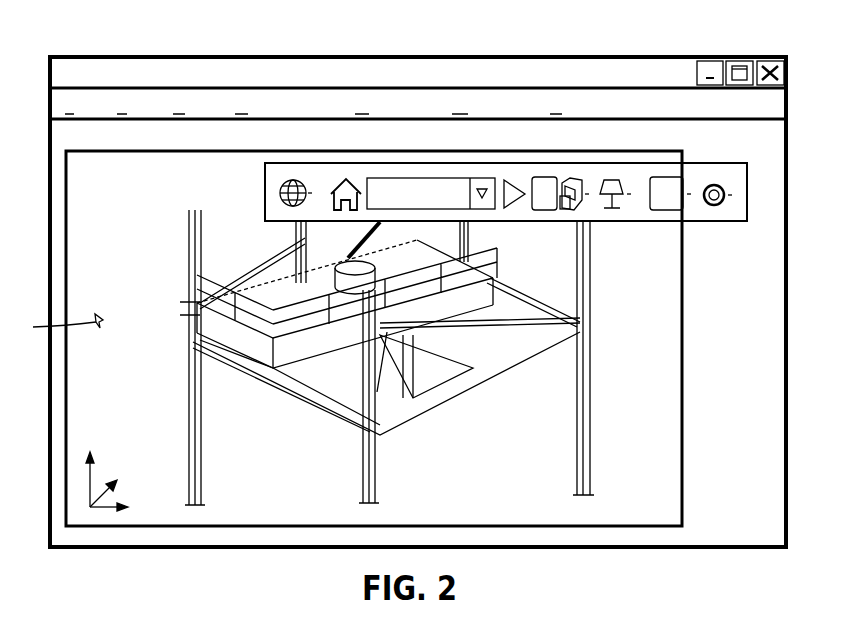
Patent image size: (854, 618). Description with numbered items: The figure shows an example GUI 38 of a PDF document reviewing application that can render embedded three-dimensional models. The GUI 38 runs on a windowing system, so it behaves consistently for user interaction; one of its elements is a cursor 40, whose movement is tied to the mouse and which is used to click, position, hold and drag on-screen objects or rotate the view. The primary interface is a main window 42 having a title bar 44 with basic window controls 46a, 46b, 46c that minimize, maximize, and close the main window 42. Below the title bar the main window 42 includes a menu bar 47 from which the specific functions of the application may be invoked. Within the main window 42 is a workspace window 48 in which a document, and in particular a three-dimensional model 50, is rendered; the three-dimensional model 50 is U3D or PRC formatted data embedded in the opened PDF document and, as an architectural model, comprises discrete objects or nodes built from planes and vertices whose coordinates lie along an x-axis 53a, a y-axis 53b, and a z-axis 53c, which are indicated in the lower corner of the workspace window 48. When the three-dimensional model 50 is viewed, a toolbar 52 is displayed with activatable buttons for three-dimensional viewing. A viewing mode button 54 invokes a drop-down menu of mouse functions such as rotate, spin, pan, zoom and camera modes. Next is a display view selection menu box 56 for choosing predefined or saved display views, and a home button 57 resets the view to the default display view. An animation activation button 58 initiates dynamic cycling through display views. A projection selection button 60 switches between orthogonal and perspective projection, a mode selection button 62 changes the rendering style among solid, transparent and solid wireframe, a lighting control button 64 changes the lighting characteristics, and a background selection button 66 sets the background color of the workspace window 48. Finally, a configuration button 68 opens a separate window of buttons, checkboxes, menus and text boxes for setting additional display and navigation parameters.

The GUI 38 is at (40, 58).
The cursor 40 is at (57, 324).
The main window 42 is at (310, 56).
The title bar 44 is at (594, 70).
The window control 46a is at (708, 61).
The window control 46b is at (739, 61).
The window control 46c is at (771, 61).
The menu bar 47 is at (766, 101).
The workspace window 48 is at (683, 432).
The three-dimensional model 50 is at (268, 448).
The toolbar 52 is at (748, 192).
The x-axis 53a is at (107, 508).
The y-axis 53b is at (89, 476).
The z-axis 53c is at (89, 500).
The viewing mode button 54 is at (278, 193).
The display view selection menu box 56 is at (430, 178).
The home button 57 is at (342, 180).
The animation activation button 58 is at (504, 180).
The projection selection button 60 is at (545, 177).
The mode selection button 62 is at (572, 178).
The lighting control button 64 is at (612, 180).
The background selection button 66 is at (663, 177).
The configuration button 68 is at (714, 184).